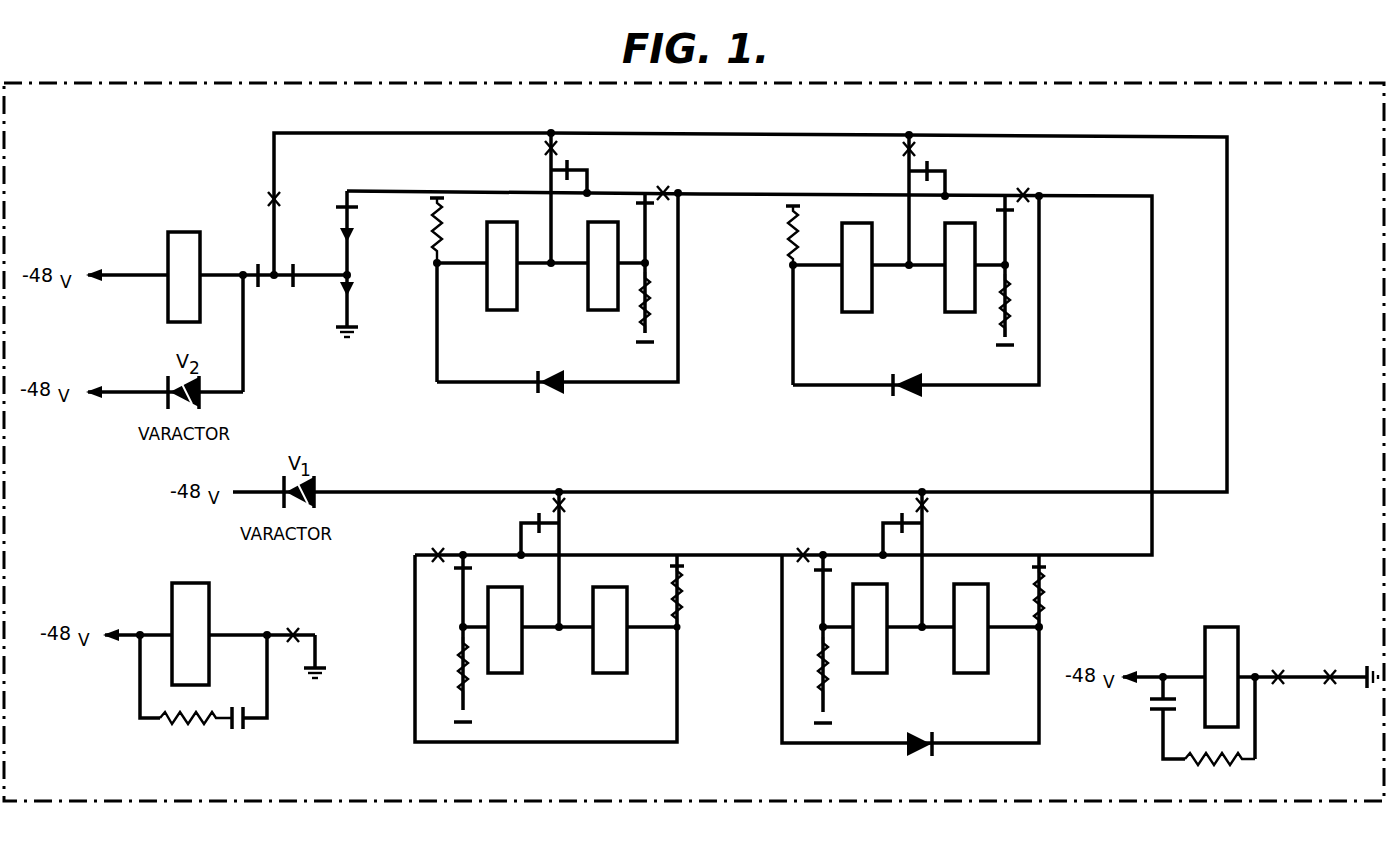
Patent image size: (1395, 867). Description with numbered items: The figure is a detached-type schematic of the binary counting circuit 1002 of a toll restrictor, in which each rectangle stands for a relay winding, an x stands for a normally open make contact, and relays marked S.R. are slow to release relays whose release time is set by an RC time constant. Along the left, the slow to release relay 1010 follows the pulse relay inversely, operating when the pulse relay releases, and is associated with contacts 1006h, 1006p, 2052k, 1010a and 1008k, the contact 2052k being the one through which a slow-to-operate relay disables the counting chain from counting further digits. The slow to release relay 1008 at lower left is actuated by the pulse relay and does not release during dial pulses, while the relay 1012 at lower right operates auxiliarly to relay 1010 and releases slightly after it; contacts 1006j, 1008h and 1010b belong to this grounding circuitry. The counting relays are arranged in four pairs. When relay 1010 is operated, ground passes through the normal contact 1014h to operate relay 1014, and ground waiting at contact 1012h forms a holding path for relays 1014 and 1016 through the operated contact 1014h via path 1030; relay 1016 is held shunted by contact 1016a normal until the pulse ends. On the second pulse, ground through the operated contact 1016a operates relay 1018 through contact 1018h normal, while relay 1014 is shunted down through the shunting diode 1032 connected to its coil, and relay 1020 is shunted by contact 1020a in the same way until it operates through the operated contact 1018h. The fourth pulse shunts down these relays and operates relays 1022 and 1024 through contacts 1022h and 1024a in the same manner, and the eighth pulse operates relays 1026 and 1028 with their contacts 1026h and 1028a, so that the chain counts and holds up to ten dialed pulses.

The binary counting circuit 1002 is at (770, 799).
The relay 1010 is at (190, 222).
The contact 1012h is at (268, 199).
The contact 1006h is at (346, 205).
The contact 2052k is at (306, 255).
The contact 1010a is at (349, 236).
The contact 1006p is at (258, 287).
The contact 1008k is at (350, 289).
The contact 1014h is at (545, 150).
The path 1030 is at (588, 162).
The contact 1016a is at (650, 190).
The relay 1014 is at (484, 290).
The relay 1016 is at (586, 288).
The shunting diode 1032 is at (552, 388).
The contact 1018h is at (903, 150).
The contact 1020a is at (1008, 190).
The relay 1018 is at (836, 296).
The relay 1020 is at (952, 283).
The contact 1026h is at (565, 520).
The contact 1028a is at (462, 552).
The relay 1028 is at (536, 662).
The relay 1026 is at (638, 662).
The contact 1022h is at (927, 520).
The contact 1024a is at (824, 552).
The relay 1024 is at (902, 662).
The relay 1022 is at (1000, 662).
The relay 1008 is at (206, 576).
The contact 1006j is at (294, 630).
The relay 1012 is at (1219, 624).
The contact 1008h is at (1278, 686).
The contact 1010b is at (1330, 686).